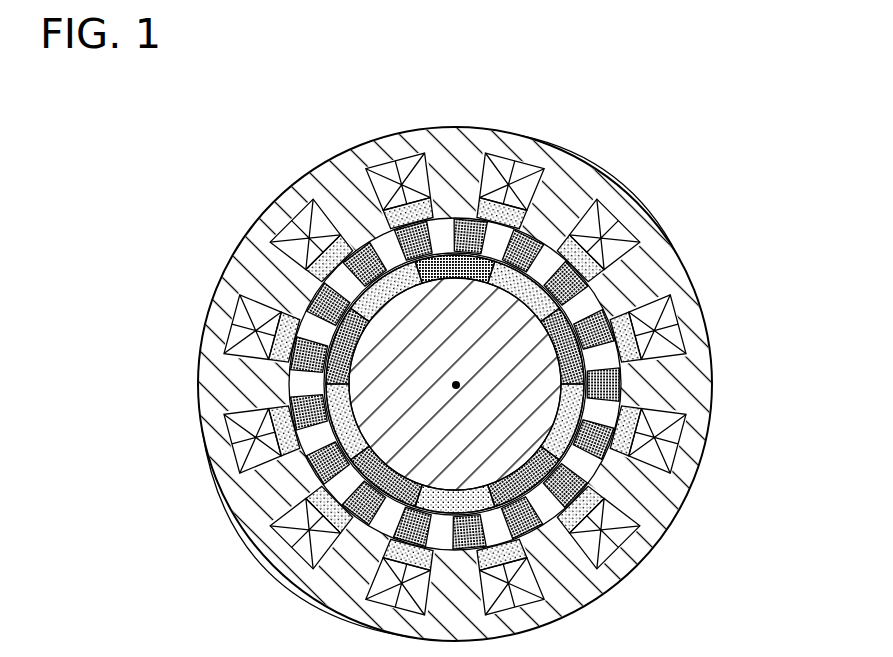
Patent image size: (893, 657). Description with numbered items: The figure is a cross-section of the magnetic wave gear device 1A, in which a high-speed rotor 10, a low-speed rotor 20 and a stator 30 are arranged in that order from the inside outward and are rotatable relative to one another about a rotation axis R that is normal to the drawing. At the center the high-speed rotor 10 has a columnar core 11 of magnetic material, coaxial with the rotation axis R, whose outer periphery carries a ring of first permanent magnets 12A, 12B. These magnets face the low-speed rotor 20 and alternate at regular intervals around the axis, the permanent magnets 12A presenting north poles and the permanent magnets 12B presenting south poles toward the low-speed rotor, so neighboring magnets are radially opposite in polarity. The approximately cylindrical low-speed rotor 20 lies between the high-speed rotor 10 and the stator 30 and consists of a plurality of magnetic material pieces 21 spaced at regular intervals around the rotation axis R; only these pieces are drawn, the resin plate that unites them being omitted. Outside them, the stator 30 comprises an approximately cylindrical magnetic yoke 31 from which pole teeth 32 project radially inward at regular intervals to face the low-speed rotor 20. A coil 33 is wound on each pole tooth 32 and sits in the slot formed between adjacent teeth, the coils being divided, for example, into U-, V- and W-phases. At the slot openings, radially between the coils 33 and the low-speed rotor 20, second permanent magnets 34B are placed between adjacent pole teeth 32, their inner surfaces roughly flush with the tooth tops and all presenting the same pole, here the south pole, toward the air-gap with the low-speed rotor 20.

The magnetic wave gear device 1A is at (153, 186).
The high-speed rotor 10 is at (353, 384).
The core 11 is at (549, 393).
The permanent magnet 12A is at (455, 300).
The permanent magnet 12B is at (499, 332).
The low-speed rotor 20 is at (369, 385).
The magnetic material piece 21 is at (464, 334).
The stator 30 is at (409, 384).
The yoke 31 is at (455, 354).
The pole tooth 32 is at (470, 168).
The coil 33 is at (509, 142).
The permanent magnet 34B is at (544, 162).
The rotation axis R is at (602, 400).